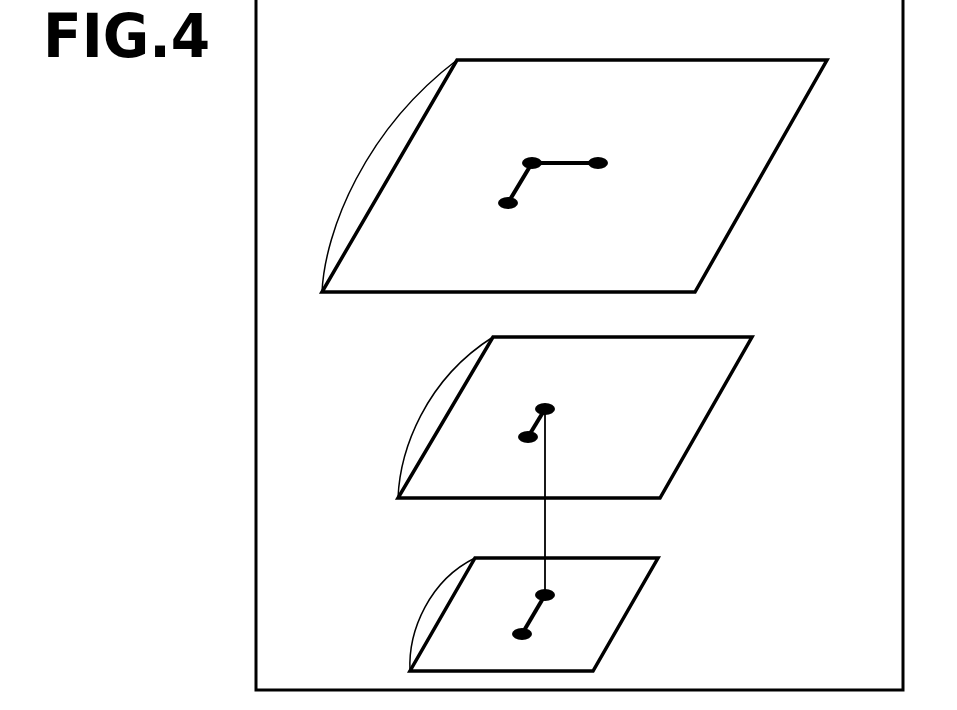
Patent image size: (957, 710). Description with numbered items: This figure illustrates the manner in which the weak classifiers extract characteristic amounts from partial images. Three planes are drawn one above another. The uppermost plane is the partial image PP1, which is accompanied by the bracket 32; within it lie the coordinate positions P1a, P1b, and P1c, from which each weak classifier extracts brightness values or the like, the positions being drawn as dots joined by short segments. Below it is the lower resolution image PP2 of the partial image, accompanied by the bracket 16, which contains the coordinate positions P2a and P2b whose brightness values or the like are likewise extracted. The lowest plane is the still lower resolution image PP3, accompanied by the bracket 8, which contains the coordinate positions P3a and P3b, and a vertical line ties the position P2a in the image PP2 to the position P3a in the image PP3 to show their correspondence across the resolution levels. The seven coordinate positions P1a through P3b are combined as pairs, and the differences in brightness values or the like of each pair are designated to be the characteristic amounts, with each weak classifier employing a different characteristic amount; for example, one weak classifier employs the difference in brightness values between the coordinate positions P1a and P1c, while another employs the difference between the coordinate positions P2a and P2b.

The first member / plane 32 is at (574, 152).
The first plane PP1 is at (728, 73).
The coordinate position P1a is at (538, 155).
The coordinate position P1b is at (608, 161).
The coordinate position P1c is at (498, 203).
The second member / plane 16 is at (583, 391).
The lower resolution image PP2 is at (717, 347).
The coordinate position P2a is at (549, 403).
The coordinate position P2b is at (522, 443).
The third member / plane 8 is at (542, 593).
The lower resolution image PP3 is at (632, 563).
The coordinate position P3a is at (556, 596).
The coordinate position P3b is at (508, 634).